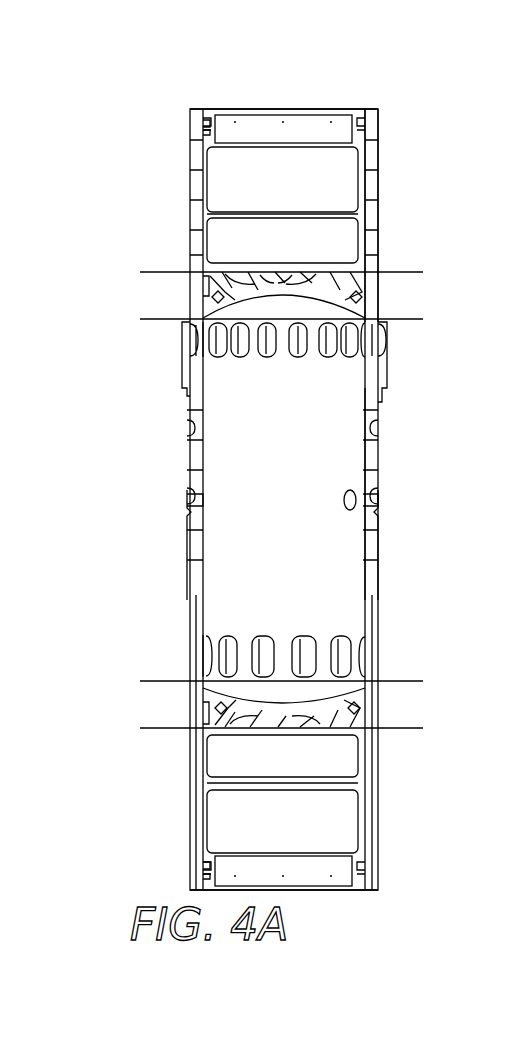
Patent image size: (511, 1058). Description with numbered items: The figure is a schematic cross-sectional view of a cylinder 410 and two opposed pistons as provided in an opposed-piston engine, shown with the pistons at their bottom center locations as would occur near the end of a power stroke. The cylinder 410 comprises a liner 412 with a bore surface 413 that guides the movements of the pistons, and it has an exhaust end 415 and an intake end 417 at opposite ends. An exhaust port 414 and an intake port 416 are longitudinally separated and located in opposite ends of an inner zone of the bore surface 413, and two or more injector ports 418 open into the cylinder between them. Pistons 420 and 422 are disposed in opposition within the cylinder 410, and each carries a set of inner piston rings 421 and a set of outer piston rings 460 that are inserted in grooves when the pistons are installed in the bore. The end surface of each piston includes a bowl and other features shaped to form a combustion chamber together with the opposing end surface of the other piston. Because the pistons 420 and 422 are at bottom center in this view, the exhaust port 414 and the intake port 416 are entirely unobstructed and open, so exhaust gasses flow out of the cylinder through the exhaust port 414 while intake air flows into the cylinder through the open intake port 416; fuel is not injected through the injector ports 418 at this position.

The cylinder 410 is at (290, 498).
The liner 412 is at (370, 197).
The bore surface 413 is at (372, 406).
The exhaust port 414 is at (387, 632).
The exhaust end 415 is at (348, 892).
The intake port 416 is at (388, 322).
The intake end 417 is at (238, 108).
The injector ports 418 is at (193, 500).
The piston 420 is at (300, 192).
The inner piston rings 421 is at (203, 292).
The piston 422 is at (300, 834).
The outer piston rings 460 is at (203, 133).